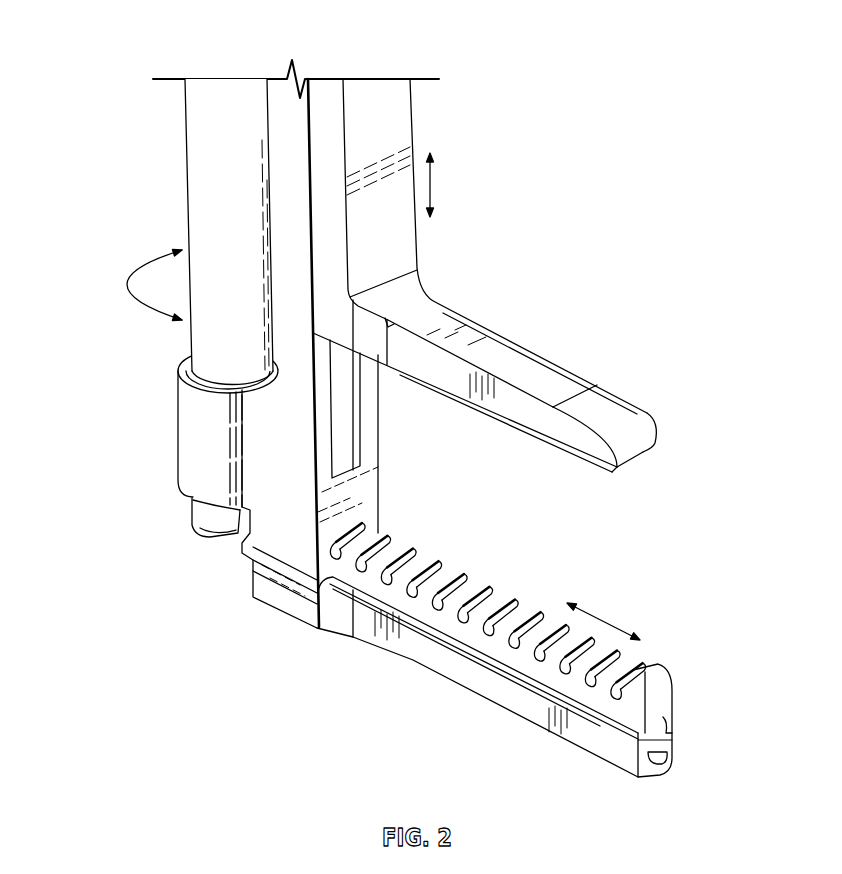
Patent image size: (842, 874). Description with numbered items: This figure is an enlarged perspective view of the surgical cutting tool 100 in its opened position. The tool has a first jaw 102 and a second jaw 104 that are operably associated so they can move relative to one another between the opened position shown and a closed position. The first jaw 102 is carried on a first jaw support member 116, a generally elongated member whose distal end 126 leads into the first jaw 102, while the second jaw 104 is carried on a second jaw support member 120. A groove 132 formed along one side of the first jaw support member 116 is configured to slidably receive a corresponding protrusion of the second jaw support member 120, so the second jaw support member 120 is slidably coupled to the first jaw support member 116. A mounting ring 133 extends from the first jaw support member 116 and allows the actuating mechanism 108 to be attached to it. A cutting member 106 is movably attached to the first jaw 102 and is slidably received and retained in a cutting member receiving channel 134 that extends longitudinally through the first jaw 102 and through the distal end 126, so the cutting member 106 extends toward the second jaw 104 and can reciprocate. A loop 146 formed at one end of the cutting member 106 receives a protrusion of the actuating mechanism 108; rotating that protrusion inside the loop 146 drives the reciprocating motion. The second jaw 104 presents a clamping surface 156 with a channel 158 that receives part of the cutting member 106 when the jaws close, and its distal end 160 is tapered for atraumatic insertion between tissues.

The surgical cutting tool 100 is at (148, 50).
The first jaw 102 is at (450, 683).
The second jaw 104 is at (596, 383).
The cutting member 106 is at (663, 707).
The actuating mechanism 108 is at (185, 190).
The first jaw support member 116 is at (372, 495).
The second jaw support member 120 is at (415, 140).
The distal end 126 is at (275, 597).
The groove 132 is at (360, 410).
The mounting ring 133 is at (178, 388).
The cutting member receiving channel 134 is at (663, 762).
The loop 146 is at (217, 540).
The clamping surface 156 is at (583, 462).
The channel 158 is at (645, 453).
The distal end 160 is at (633, 430).